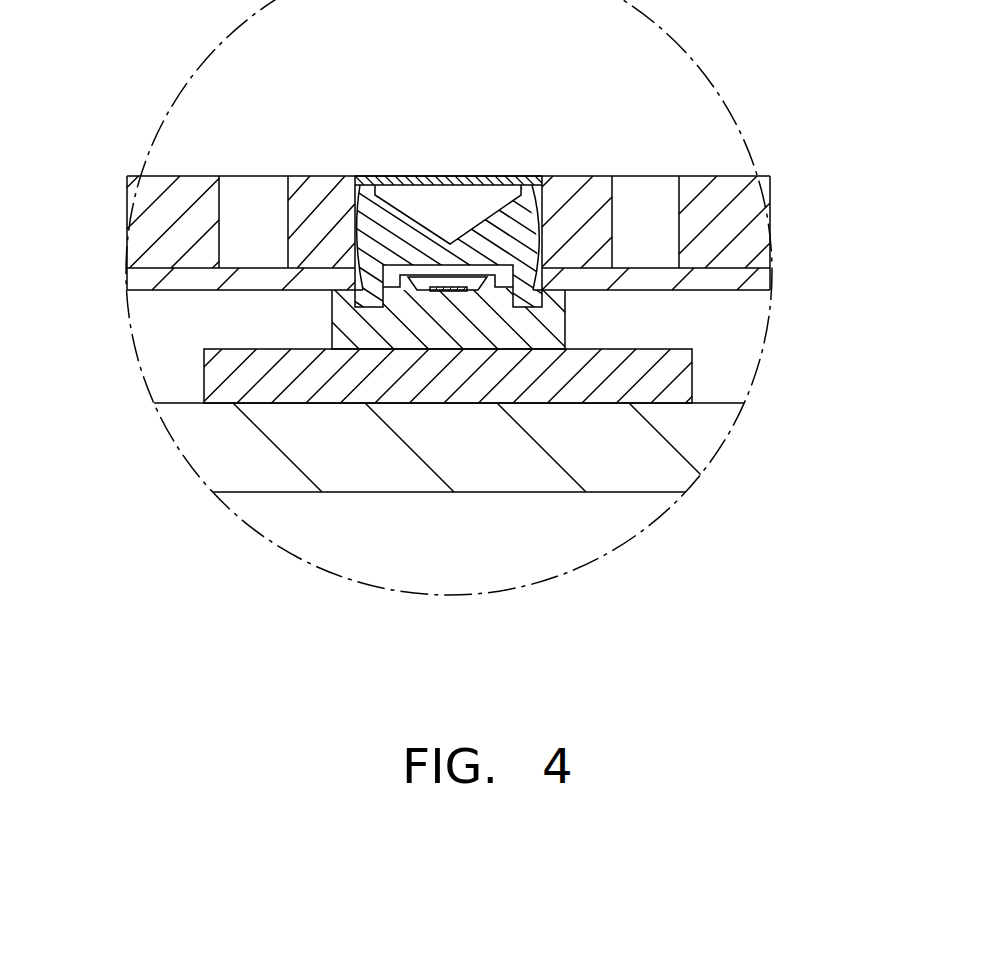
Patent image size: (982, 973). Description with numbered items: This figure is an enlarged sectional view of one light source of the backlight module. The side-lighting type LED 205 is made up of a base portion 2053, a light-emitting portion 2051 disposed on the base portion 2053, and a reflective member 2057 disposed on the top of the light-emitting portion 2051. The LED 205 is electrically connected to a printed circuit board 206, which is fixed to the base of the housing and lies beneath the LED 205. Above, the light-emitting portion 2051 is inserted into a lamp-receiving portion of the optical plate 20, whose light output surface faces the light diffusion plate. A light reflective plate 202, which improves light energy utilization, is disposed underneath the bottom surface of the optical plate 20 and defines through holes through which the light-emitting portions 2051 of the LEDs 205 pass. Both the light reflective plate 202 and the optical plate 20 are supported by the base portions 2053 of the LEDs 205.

The optical plate 20 is at (702, 176).
The light reflective plate 202 is at (723, 292).
The light-emitting portion 2051 is at (340, 177).
The reflective member 2057 is at (445, 176).
The base portion 2053 is at (338, 324).
The printed circuit board 206 is at (217, 375).
The side-lighting type LED 205 is at (612, 318).